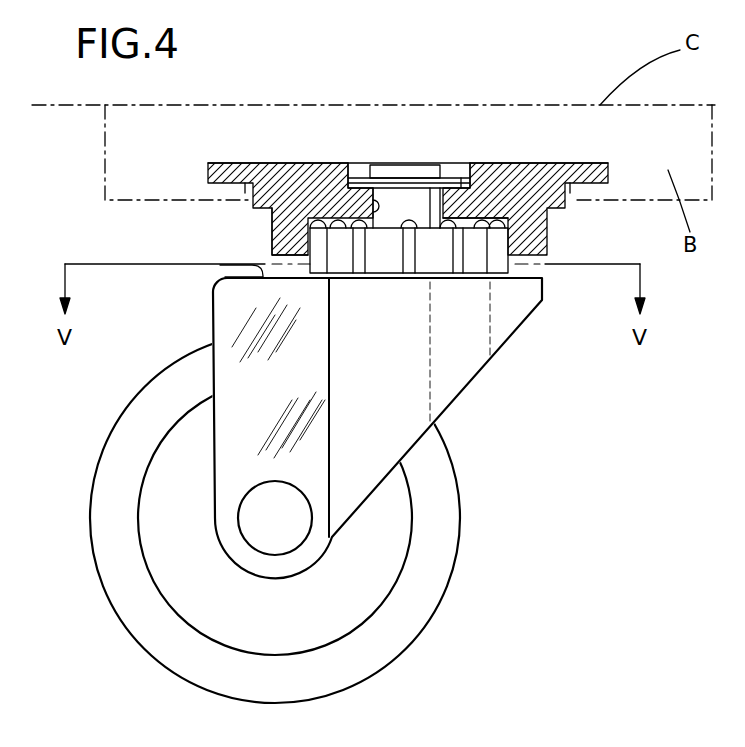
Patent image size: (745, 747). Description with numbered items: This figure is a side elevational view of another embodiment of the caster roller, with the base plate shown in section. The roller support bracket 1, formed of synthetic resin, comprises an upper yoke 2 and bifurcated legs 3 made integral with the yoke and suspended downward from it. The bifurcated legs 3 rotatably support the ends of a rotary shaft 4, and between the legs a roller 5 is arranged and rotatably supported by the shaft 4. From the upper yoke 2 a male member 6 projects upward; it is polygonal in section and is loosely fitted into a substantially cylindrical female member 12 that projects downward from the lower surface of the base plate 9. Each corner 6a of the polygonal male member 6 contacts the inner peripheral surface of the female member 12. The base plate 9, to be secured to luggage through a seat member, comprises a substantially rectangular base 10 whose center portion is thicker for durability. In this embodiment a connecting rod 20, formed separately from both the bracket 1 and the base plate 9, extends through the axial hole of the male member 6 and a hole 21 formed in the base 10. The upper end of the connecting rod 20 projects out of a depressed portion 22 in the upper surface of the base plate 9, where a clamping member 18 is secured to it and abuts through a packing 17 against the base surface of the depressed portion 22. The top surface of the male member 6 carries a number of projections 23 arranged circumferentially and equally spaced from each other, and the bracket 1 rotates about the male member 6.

The roller support bracket 1 is at (476, 405).
The upper yoke 2 is at (242, 267).
The bifurcated legs 3 is at (265, 382).
The rotary shaft 4 is at (275, 517).
The roller 5 is at (125, 580).
The male member 6 is at (482, 244).
The corner of the male member 6a is at (460, 256).
The base plate 9 is at (135, 170).
The base 10 is at (330, 203).
The female member 12 is at (275, 237).
The packing 17 is at (403, 188).
The clamping member 18 is at (348, 176).
The connecting rod 20 is at (421, 192).
The hole 21 is at (372, 207).
The depressed portion 22 is at (462, 172).
The projections 23 is at (480, 215).